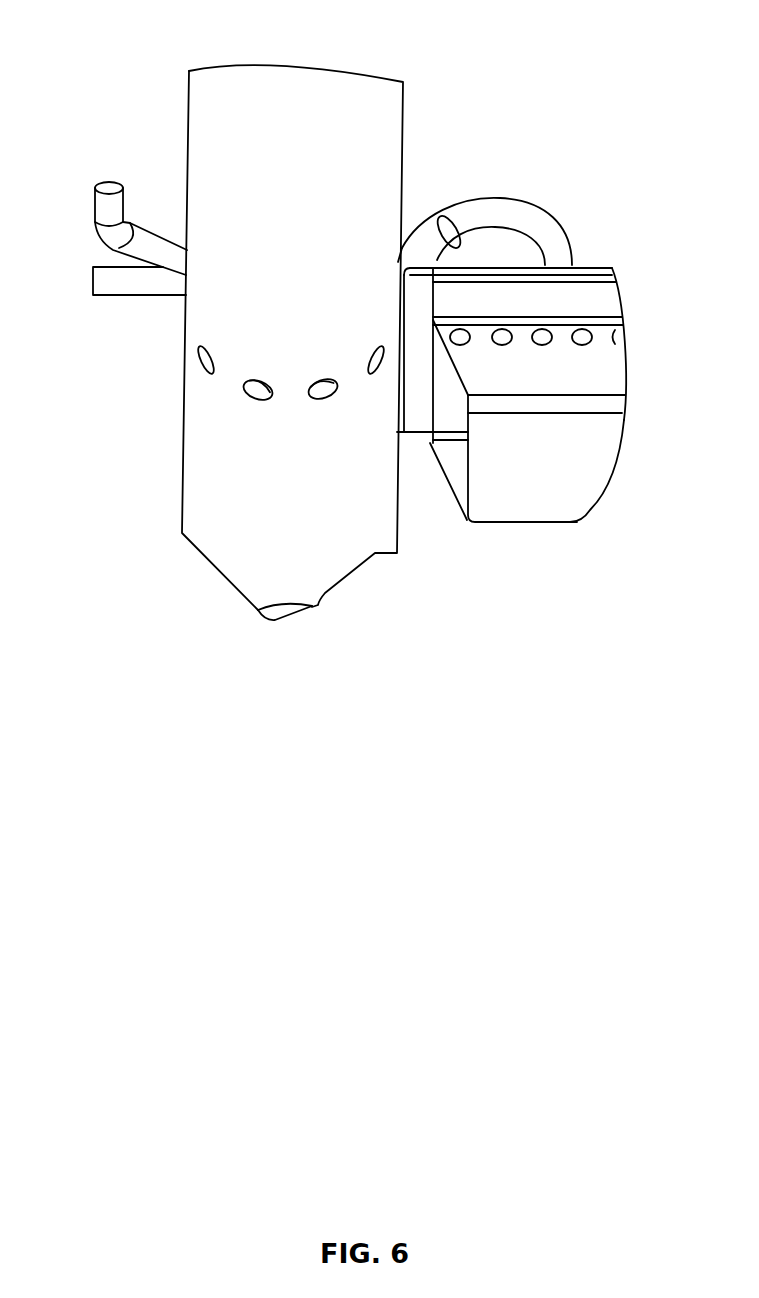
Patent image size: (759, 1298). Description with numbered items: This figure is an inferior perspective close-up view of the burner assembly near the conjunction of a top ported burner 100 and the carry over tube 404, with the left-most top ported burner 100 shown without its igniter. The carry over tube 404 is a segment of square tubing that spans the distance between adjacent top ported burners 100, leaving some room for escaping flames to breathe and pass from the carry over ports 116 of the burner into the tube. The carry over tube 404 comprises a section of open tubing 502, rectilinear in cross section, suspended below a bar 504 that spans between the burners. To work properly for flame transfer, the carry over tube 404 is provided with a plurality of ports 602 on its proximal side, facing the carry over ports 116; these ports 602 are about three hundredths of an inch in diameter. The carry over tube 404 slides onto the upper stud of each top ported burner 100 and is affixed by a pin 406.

The top ported burner 100 is at (375, 135).
The pin 406 is at (104, 185).
The carry over ports 116 is at (234, 385).
The ports 602 is at (557, 323).
The bar 504 is at (602, 298).
The open tubing 502 is at (607, 390).
The carry over tube 404 is at (537, 472).